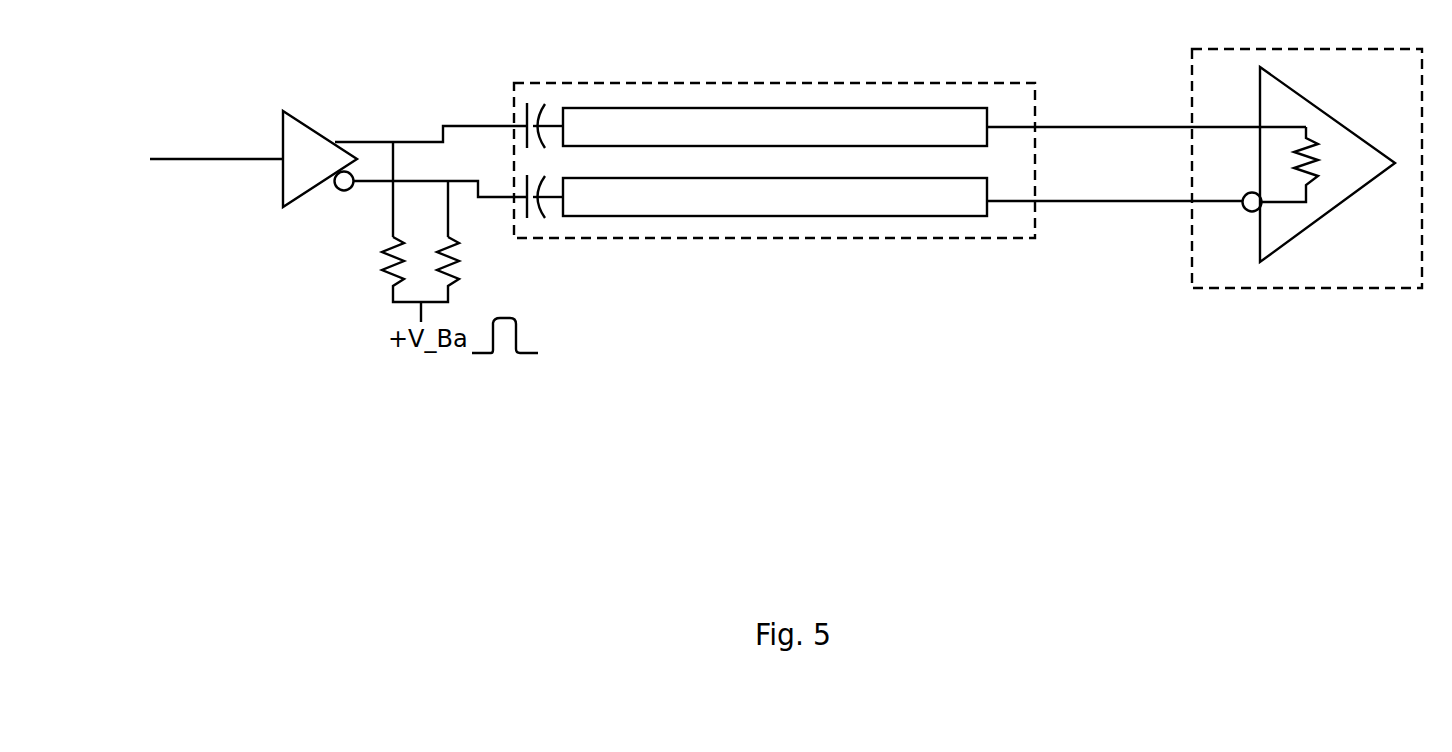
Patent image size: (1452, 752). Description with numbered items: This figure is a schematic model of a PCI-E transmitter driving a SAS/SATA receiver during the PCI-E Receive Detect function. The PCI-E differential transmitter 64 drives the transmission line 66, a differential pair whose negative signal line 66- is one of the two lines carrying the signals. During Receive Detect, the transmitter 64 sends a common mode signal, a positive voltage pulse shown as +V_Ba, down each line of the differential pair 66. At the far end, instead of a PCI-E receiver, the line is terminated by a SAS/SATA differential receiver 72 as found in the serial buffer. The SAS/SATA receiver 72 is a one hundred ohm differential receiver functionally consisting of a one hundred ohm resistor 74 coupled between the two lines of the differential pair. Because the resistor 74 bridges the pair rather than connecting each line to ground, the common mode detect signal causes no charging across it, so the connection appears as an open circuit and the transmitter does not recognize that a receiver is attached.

The PCI-E differential transmitter 64 is at (313, 126).
The transmission line 66 is at (605, 83).
The transmission line 66- is at (382, 183).
The SAS/SATA differential receiver 72 is at (1307, 155).
The 100 ohm resistor 74 is at (1313, 187).